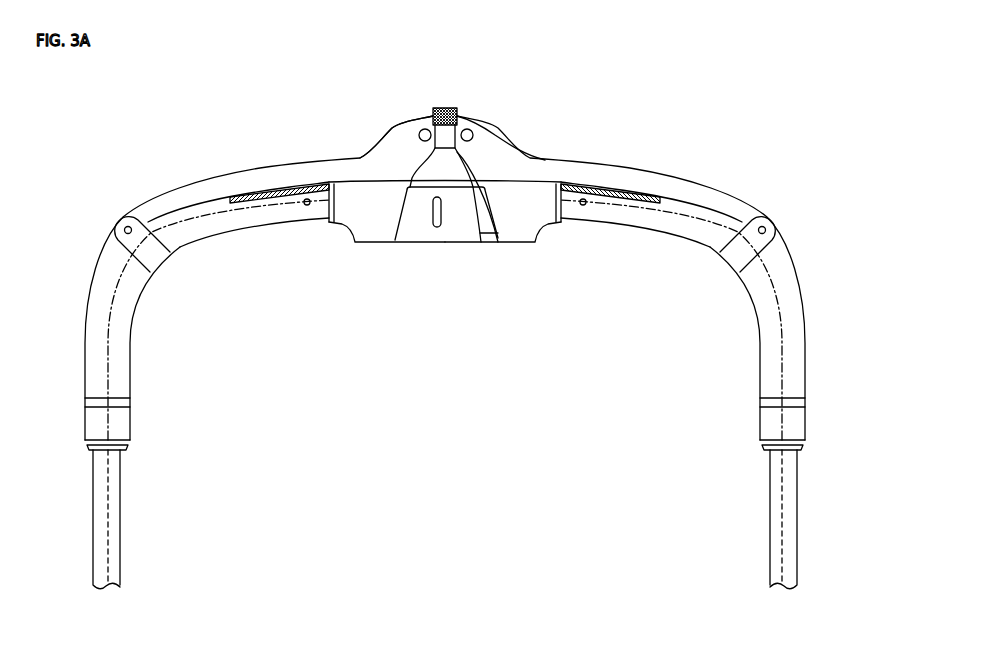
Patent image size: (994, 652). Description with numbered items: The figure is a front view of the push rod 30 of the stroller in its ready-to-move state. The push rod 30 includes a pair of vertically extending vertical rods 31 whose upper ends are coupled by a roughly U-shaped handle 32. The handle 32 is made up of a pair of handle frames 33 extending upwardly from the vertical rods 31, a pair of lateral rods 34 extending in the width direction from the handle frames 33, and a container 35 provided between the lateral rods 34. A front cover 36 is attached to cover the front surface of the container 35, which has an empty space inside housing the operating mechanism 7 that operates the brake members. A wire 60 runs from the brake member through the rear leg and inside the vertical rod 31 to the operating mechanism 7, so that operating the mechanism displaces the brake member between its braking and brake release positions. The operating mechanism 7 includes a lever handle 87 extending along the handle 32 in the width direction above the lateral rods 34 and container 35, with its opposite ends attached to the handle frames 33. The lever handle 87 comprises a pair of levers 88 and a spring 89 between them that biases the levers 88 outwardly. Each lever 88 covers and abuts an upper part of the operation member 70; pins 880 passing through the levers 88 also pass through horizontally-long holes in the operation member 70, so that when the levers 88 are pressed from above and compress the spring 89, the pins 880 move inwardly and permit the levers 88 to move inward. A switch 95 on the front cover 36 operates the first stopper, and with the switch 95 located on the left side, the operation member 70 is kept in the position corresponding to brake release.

The operating mechanism 7 is at (600, 84).
The push rod 30 is at (851, 415).
The vertical rod 31 is at (100, 522).
The handle 32 is at (360, 315).
The handle frame 33 is at (143, 303).
The lateral rod 34 is at (252, 210).
The container 35 is at (348, 251).
The front cover 36 is at (566, 222).
The wire 60 is at (117, 327).
The operation member 70 is at (490, 242).
The lever handle 87 is at (518, 58).
The lever 88 is at (404, 142).
The spring 89 is at (447, 108).
The switch 95 is at (450, 230).
The pin 880 is at (425, 141).